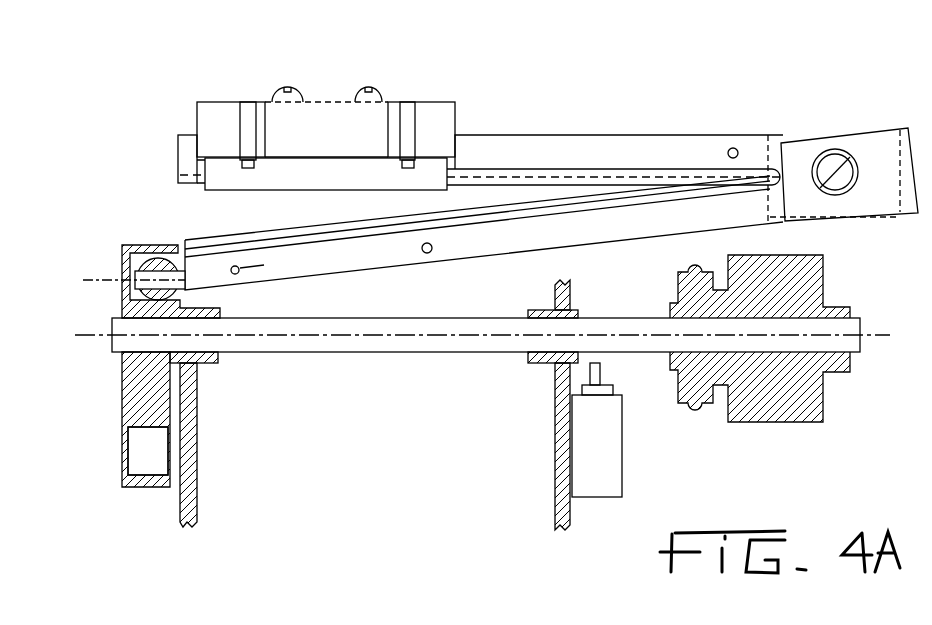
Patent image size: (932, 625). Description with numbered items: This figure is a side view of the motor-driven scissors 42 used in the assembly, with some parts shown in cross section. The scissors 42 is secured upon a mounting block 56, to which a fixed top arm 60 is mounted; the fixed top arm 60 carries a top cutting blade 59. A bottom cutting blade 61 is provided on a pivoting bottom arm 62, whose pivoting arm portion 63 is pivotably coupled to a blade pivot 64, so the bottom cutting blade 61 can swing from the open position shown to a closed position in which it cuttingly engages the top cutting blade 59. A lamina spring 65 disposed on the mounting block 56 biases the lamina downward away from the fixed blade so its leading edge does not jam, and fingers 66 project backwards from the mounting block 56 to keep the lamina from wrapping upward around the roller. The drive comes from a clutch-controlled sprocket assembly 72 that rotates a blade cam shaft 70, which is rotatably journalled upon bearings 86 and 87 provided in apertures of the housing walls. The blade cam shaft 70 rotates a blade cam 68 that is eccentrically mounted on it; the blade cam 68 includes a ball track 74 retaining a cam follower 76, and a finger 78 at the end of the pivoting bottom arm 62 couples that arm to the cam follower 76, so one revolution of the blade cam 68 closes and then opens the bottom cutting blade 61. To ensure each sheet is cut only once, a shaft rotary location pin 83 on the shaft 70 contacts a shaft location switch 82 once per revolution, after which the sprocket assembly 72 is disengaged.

The scissors 42 is at (640, 78).
The mounting block 56 is at (440, 110).
The top cutting blade 59 is at (180, 180).
The fixed top arm 60 is at (533, 145).
The bottom cutting blade 61 is at (308, 226).
The pivoting bottom arm 62 is at (513, 250).
The pivoting arm portion 63 is at (880, 150).
The blade pivot 64 is at (822, 150).
The lamina spring 65 is at (323, 120).
The fingers 66 is at (247, 105).
The blade cam 68 is at (122, 395).
The blade cam shaft 70 is at (375, 354).
The clutch-controlled sprocket assembly 72 is at (793, 424).
The ball track 74 is at (122, 250).
The cam follower 76 is at (173, 250).
The finger 78 is at (135, 284).
The shaft location switch 82 is at (612, 466).
The shaft rotary location pin 83 is at (602, 368).
The bearing 86 is at (537, 367).
The bearing 87 is at (207, 362).